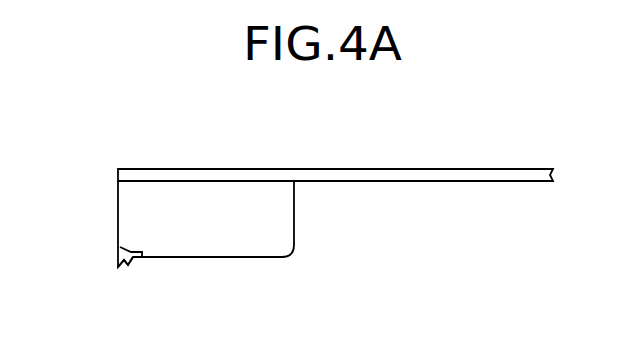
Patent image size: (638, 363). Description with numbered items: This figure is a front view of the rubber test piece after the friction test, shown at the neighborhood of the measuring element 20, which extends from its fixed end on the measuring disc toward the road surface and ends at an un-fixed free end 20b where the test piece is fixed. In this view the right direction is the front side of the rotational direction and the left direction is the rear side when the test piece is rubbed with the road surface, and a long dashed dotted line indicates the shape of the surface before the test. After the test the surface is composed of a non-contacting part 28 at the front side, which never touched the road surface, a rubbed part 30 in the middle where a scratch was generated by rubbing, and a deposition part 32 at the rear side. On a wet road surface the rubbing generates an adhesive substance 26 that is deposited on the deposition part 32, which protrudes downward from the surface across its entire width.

The measuring element 20 is at (368, 178).
The free end 20b is at (118, 175).
The adhesive substance 26 is at (120, 247).
The non-contacting part 28 is at (257, 258).
The rubbed part 30 is at (195, 258).
The deposition part 32 is at (132, 270).